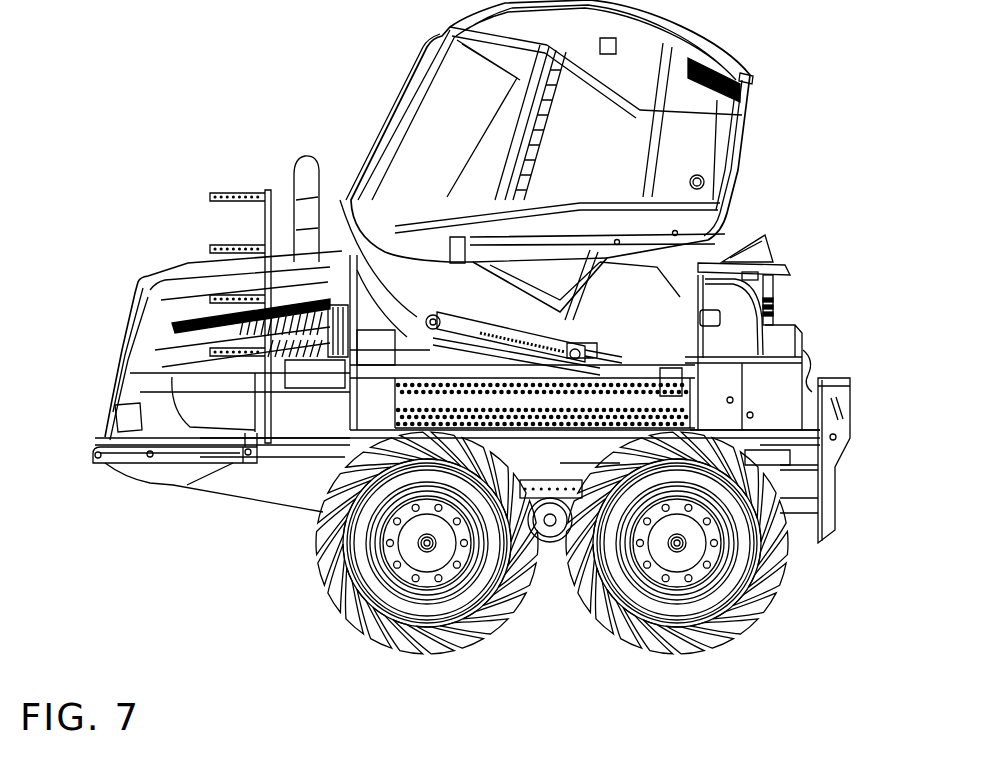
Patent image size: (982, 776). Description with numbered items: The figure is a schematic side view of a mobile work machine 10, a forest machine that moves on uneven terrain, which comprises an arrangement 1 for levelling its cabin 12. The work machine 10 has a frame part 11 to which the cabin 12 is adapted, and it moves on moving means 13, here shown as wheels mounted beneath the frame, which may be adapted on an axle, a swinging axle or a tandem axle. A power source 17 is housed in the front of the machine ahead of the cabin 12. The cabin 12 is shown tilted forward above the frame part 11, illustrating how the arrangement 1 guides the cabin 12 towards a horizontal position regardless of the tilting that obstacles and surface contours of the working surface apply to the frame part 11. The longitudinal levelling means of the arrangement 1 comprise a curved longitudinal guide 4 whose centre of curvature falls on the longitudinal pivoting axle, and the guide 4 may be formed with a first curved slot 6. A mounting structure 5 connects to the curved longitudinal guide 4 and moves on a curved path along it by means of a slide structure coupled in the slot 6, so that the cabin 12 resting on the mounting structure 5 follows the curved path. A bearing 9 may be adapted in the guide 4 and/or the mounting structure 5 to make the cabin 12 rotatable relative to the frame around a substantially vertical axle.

The mobile work machine 10 is at (180, 111).
The cabin 12 is at (786, 140).
The power source 17 is at (160, 250).
The arrangement for levelling the cabin 1 is at (414, 316).
The bearing 9 is at (605, 349).
The mounting structure 5 is at (690, 370).
The frame part 11 is at (232, 490).
The curved longitudinal guide 4 is at (373, 362).
The first curved slot 6 is at (430, 355).
The moving means 13 is at (383, 602).